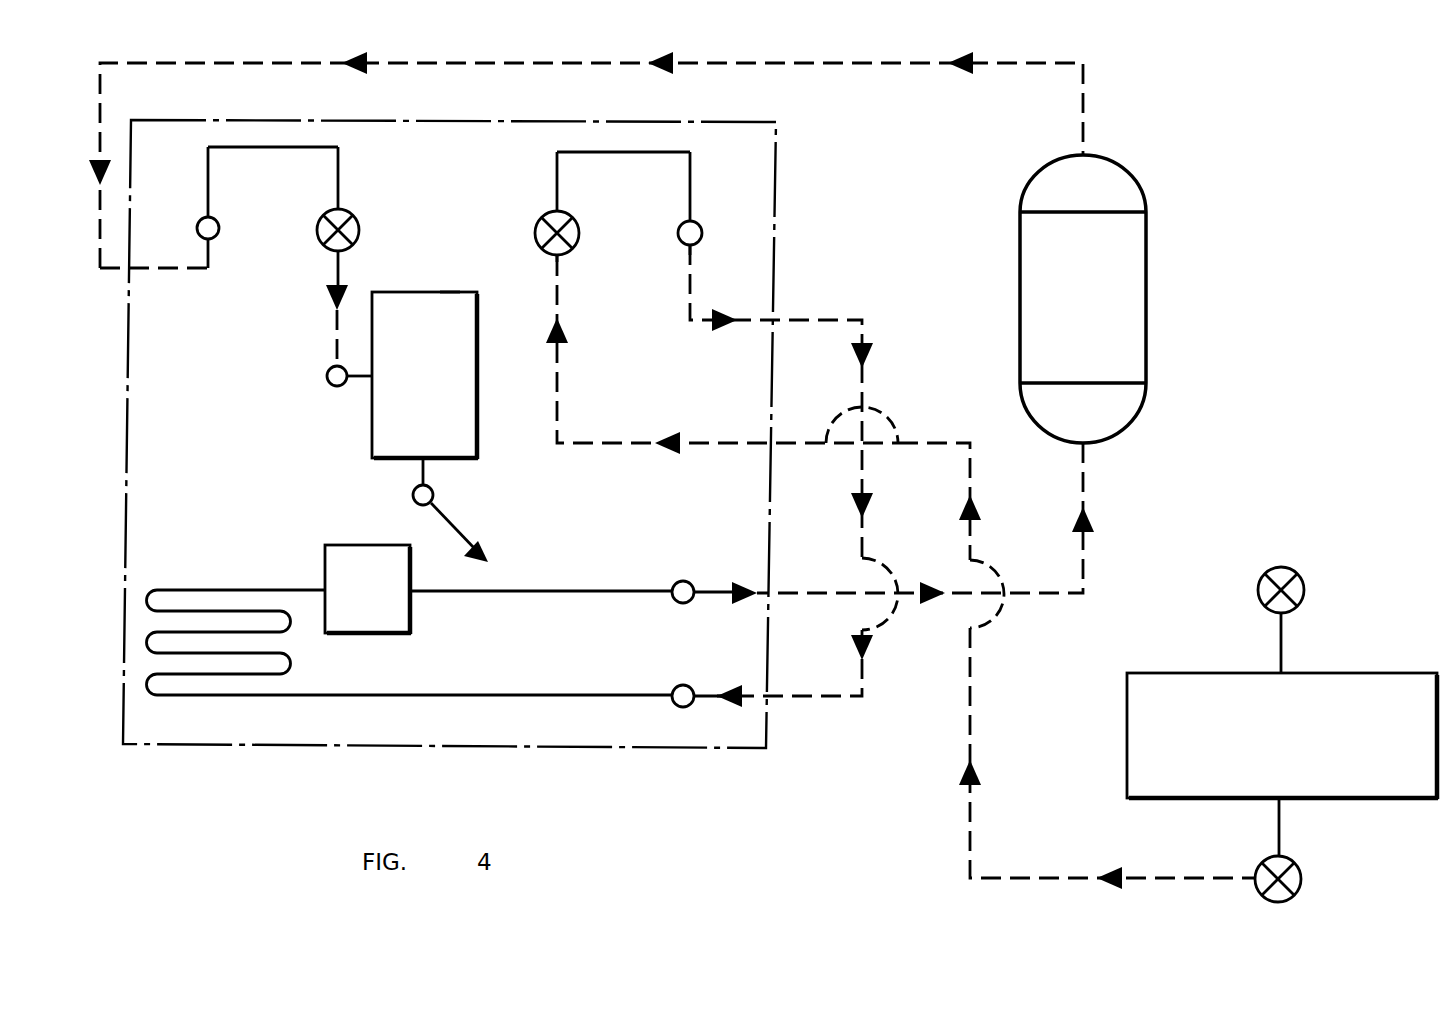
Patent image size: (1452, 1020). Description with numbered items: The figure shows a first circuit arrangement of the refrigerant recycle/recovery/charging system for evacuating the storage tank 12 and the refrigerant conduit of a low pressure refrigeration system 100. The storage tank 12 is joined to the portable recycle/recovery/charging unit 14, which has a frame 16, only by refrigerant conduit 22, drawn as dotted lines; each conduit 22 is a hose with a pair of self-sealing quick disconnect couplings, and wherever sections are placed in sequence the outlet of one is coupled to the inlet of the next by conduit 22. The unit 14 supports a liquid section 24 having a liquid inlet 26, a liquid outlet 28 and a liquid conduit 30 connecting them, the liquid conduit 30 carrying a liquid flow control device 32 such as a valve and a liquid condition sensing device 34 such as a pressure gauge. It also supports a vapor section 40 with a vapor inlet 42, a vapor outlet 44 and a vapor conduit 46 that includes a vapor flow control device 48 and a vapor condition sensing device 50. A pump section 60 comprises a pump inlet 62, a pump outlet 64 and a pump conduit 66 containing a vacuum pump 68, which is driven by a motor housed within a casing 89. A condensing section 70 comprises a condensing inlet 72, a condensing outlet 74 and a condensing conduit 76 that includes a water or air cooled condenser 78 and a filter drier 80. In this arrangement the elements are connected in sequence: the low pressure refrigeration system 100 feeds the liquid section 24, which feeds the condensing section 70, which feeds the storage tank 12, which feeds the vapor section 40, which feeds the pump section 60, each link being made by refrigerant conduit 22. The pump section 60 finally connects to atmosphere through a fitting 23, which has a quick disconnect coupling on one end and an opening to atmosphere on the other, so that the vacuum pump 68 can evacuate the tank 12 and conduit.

The storage tank 12 is at (1094, 309).
The portable recycle/recovery/charging unit 14 is at (455, 434).
The frame 16 is at (778, 243).
The refrigerant conduit 22 is at (1090, 118).
The fitting 23 is at (452, 527).
The liquid section 24 is at (624, 214).
The liquid inlet 26 is at (697, 244).
The liquid outlet 28 is at (554, 256).
The liquid conduit 30 is at (665, 152).
The liquid flow control device 32 is at (579, 243).
The liquid condition sensing device 34 is at (687, 244).
The vapor section 40 is at (278, 213).
The vapor inlet 42 is at (203, 238).
The vapor outlet 44 is at (342, 251).
The vapor conduit 46 is at (322, 147).
The vapor flow control device 48 is at (322, 246).
The vapor condition sensing device 50 is at (218, 226).
The pump section 60 is at (401, 408).
The pump inlet 62 is at (328, 382).
The pump outlet 64 is at (435, 491).
The pump conduit 66 is at (358, 384).
The vacuum pump 68 is at (433, 392).
The condensing section 70 is at (442, 641).
The condensing inlet 72 is at (677, 688).
The condensing outlet 74 is at (688, 582).
The condensing conduit 76 is at (413, 695).
The condenser 78 is at (160, 695).
The filter drier 80 is at (376, 606).
The casing 89 is at (451, 290).
The low pressure refrigeration system 100 is at (1304, 755).